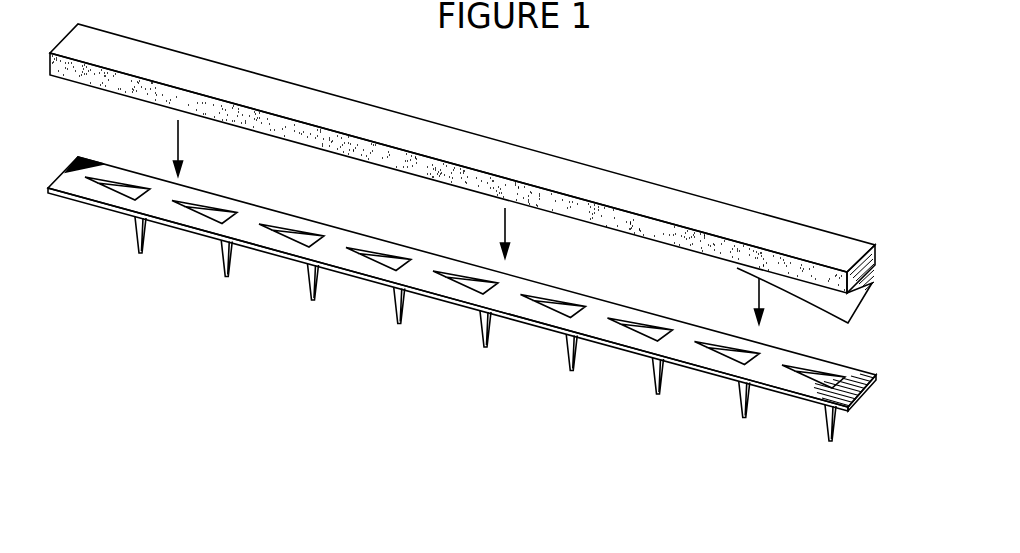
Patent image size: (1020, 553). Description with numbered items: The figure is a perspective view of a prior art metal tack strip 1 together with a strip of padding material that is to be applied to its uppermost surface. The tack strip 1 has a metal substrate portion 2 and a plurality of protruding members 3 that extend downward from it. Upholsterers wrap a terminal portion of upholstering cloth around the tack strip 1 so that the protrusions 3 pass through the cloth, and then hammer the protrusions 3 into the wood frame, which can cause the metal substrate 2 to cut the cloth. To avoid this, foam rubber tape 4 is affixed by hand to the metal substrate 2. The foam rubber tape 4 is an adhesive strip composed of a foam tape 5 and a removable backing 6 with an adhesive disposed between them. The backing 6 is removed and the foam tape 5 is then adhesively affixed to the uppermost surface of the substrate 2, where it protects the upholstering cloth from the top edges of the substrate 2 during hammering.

The metal tack strip 1 is at (482, 380).
The metal substrate portion 2 is at (600, 301).
The protruding members 3 is at (572, 364).
The foam rubber tape 4 is at (554, 180).
The foam tape 5 is at (877, 252).
The removable backing 6 is at (863, 301).